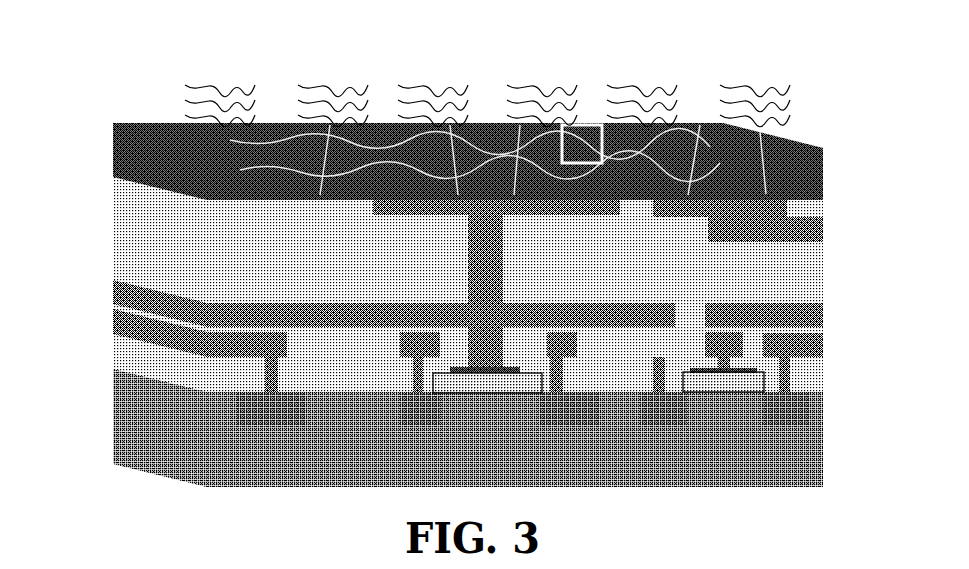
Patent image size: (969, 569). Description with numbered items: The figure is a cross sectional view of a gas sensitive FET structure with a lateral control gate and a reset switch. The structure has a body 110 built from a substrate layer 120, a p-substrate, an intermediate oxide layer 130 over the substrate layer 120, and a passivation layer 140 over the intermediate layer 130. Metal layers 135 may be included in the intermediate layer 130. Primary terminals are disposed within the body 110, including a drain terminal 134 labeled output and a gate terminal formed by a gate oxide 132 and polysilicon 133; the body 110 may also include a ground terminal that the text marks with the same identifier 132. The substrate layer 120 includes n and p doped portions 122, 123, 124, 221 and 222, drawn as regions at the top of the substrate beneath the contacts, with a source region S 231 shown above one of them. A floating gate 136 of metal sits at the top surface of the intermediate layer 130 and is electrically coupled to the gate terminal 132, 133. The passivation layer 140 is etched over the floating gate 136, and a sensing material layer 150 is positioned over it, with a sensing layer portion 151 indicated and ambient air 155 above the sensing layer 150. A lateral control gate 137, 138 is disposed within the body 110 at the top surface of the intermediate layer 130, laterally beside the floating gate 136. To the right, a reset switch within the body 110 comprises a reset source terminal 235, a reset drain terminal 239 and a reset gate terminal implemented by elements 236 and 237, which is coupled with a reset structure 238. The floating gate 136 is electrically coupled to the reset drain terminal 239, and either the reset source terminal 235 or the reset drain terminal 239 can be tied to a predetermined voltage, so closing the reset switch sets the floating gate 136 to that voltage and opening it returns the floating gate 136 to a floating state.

The body 110 is at (135, 112).
The substrate layer 120 is at (468, 428).
The n doped portion 122 is at (570, 421).
The n doped portion 123 is at (420, 404).
The p doped portion 124 is at (272, 405).
The intermediate layer 130 is at (468, 305).
The gate oxide 132 is at (553, 294).
The polysilicon 133 is at (457, 364).
The drain terminal 134 is at (394, 304).
The metal layers 135 is at (387, 244).
The floating gate 136 is at (496, 277).
The lateral control gate 137 is at (720, 202).
The lateral control gate 138 is at (765, 244).
The passivation layer 140 is at (118, 145).
The sensing material layer 150 is at (712, 83).
The sensing layer portion 151 is at (578, 134).
The ambient air 155 is at (487, 92).
The n doped portion 221 is at (663, 421).
The n doped portion 222 is at (786, 404).
The source contact 231 is at (577, 362).
The reset source terminal 235 is at (857, 325).
The reset gate terminal 236 is at (697, 382).
The reset gate terminal 237 is at (735, 373).
The reset structure 238 is at (764, 323).
The reset drain terminal 239 is at (660, 362).